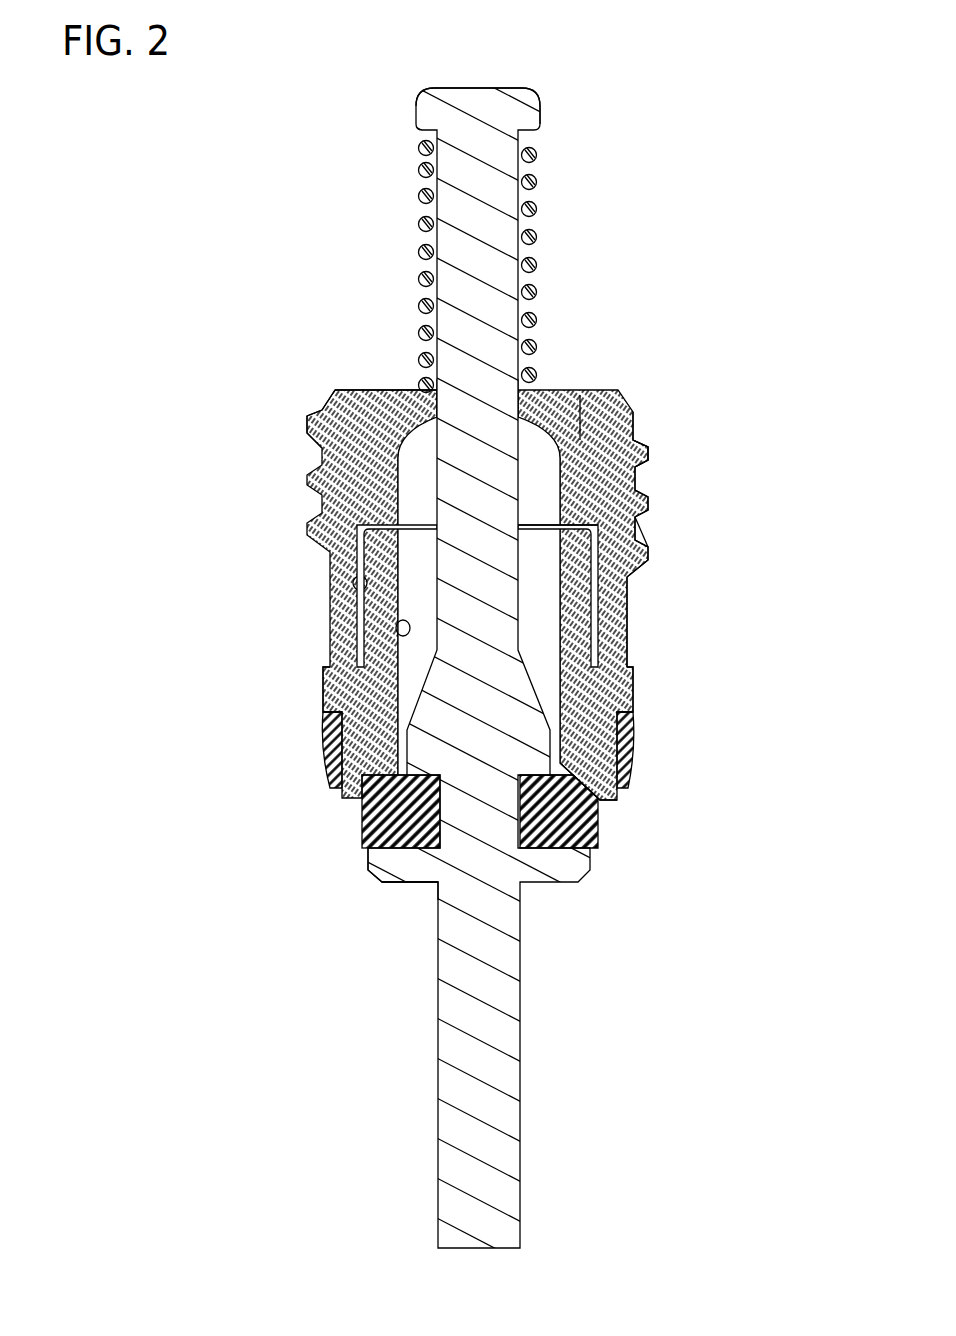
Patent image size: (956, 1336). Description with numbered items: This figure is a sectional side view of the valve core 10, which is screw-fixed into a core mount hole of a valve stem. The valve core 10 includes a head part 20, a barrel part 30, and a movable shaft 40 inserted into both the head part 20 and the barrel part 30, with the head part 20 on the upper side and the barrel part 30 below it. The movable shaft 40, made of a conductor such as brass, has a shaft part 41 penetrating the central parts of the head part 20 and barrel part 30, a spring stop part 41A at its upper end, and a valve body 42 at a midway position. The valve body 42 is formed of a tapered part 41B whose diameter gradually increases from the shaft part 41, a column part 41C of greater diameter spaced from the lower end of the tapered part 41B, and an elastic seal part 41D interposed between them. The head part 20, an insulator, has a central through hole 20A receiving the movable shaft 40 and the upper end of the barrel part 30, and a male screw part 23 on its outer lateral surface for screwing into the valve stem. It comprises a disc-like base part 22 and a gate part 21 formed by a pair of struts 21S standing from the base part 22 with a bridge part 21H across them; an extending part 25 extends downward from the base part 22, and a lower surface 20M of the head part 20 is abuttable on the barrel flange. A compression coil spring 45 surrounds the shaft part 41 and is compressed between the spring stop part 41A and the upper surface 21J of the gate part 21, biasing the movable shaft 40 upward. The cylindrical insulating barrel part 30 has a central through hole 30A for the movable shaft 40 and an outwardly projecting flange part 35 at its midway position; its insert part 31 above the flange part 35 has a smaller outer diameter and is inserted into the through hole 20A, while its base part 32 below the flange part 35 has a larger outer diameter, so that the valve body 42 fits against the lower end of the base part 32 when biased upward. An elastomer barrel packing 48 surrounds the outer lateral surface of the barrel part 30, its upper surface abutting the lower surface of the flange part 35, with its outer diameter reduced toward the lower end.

The valve core 10 is at (726, 90).
The head part 20 is at (473, 562).
The through hole 20A is at (348, 590).
The lower surface 20M is at (323, 687).
The gate part 21 is at (642, 468).
The bridge part 21H is at (378, 392).
The upper surface 21J is at (343, 388).
The strut 21S is at (328, 426).
The base part 22 is at (610, 532).
The male screw part 23 is at (600, 445).
The extending part 25 is at (625, 647).
The barrel part 30 is at (473, 596).
The through hole 30A is at (395, 635).
The insert part 31 is at (605, 556).
The base part 32 is at (617, 786).
The flange part 35 is at (633, 688).
The movable shaft 40 is at (439, 676).
The shaft part 41 is at (439, 677).
The spring stop part 41A is at (531, 104).
The tapered part 41B is at (362, 840).
The column part 41C is at (413, 865).
The seal part 41D is at (357, 803).
The valve body 42 is at (598, 835).
The compression coil spring 45 is at (537, 151).
The barrel packing 48 is at (633, 742).